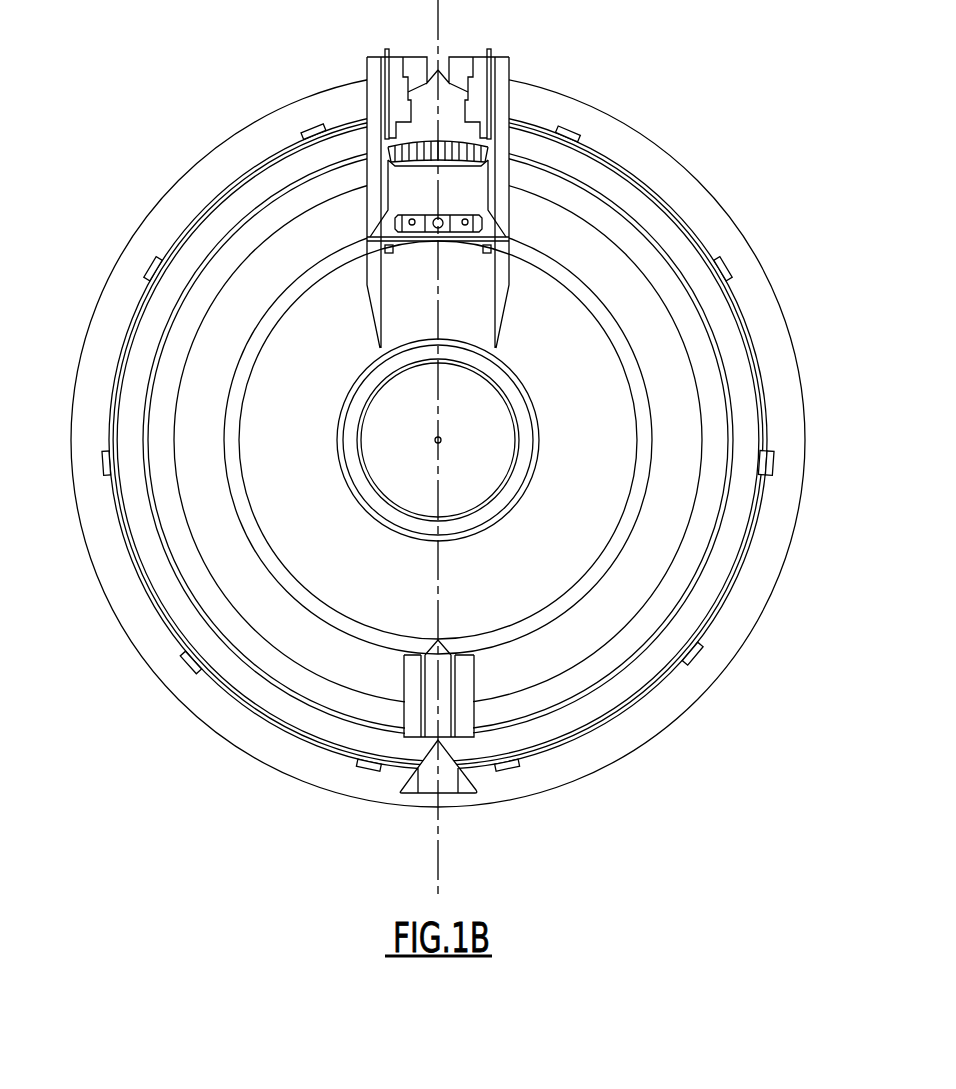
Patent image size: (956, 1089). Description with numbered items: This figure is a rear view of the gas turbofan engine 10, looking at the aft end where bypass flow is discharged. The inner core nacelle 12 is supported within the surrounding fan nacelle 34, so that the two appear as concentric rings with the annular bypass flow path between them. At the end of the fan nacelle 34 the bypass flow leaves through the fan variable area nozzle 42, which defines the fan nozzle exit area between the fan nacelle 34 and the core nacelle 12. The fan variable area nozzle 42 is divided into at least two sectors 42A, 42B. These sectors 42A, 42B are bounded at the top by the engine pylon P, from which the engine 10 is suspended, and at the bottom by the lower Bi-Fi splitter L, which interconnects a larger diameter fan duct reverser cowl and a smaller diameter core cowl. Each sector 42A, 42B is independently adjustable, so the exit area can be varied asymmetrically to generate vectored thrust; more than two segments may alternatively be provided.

The gas turbofan engine 10 is at (666, 75).
The core nacelle 12 is at (348, 570).
The fan nacelle 34 is at (680, 174).
The fan variable area nozzle 42 is at (445, 441).
The first sector 42A is at (75, 232).
The second sector 42B is at (848, 187).
The engine pylon P is at (505, 70).
The lower Bi-Fi splitter L is at (458, 719).